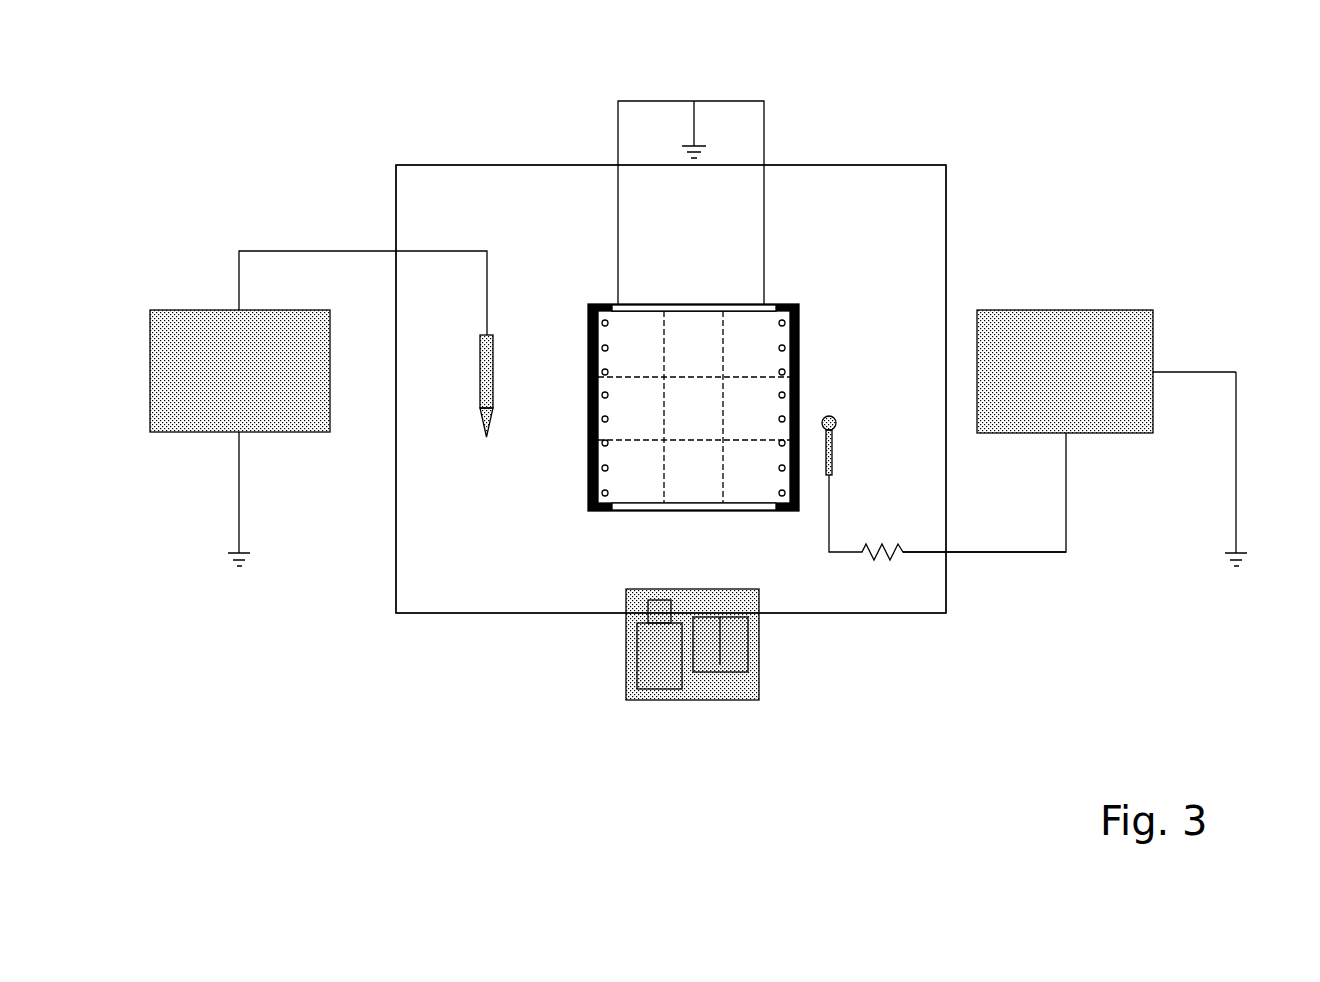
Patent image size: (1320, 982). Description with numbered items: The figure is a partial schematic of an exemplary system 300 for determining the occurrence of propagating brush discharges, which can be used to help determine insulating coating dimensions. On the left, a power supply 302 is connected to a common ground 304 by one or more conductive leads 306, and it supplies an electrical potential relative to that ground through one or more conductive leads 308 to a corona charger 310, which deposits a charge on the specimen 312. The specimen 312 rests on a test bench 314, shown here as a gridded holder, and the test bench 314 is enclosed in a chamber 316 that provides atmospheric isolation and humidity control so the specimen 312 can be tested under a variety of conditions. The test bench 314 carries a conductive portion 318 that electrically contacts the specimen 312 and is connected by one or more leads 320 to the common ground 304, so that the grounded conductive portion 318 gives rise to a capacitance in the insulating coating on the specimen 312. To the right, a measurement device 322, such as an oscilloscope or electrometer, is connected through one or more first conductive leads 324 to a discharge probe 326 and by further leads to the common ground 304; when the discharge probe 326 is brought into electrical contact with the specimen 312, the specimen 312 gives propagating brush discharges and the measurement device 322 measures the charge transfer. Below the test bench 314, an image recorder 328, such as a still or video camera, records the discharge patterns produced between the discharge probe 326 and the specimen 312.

The system 300 is at (234, 86).
The power supply 302 is at (297, 308).
The common ground 304 is at (245, 588).
The conductive leads 306 is at (238, 488).
The conductive leads 308 is at (315, 249).
The corona charger 310 is at (494, 345).
The specimen 312 is at (747, 496).
The test bench 314 is at (587, 496).
The chamber 316 is at (878, 620).
The conductive portion 318 is at (695, 304).
The leads 320 is at (764, 212).
The measurement device 322 is at (1137, 308).
The first conductive leads 324 is at (1037, 552).
The discharge probe 326 is at (832, 455).
The image recorder 328 is at (746, 706).